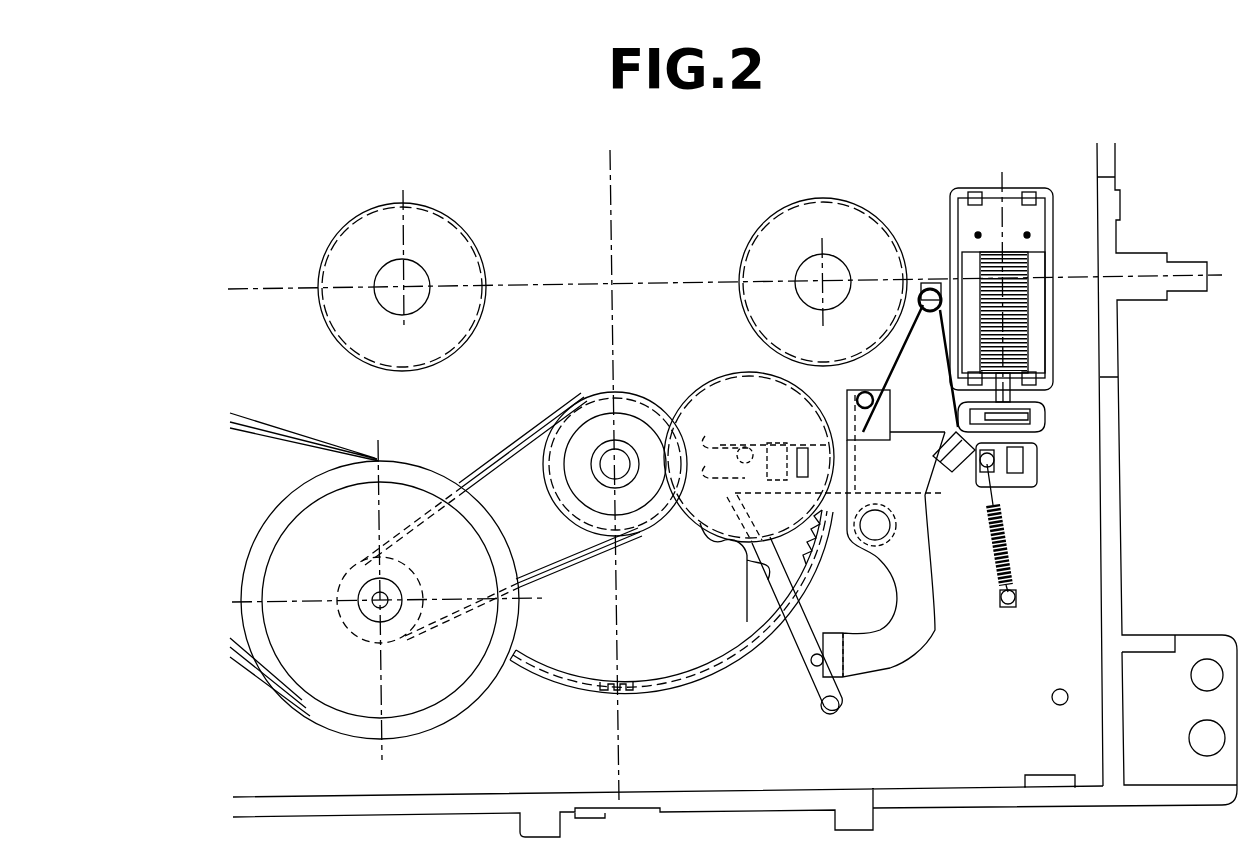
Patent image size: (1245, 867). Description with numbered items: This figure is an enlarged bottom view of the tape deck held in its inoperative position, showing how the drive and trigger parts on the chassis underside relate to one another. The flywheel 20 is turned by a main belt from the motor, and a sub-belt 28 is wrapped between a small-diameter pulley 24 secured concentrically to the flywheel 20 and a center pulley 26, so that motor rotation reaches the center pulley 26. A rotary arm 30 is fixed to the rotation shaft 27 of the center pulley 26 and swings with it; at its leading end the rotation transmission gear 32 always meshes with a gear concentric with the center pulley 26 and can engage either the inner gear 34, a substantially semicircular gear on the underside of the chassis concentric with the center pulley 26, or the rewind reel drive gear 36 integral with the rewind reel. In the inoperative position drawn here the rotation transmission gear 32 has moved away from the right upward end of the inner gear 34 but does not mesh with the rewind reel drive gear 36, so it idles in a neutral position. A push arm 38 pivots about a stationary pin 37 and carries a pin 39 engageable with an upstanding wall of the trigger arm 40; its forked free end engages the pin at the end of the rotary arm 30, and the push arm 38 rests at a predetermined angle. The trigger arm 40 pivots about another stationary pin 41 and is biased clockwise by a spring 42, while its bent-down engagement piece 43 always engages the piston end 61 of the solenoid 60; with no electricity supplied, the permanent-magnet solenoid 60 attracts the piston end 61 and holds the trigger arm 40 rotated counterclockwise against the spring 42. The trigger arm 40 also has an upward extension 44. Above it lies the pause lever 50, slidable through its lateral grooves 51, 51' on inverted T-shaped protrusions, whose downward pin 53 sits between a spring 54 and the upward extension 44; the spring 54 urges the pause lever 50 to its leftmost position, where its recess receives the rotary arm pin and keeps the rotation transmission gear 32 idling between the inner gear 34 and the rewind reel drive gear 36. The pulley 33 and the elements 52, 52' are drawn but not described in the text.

The flywheel 20 is at (335, 697).
The small-diameter pulley 24 is at (357, 577).
The center pulley 26 is at (627, 403).
The rotation shaft 27 is at (613, 464).
The sub-belt 28 is at (498, 458).
The rotary arm 30 is at (700, 523).
The rotation transmission gear 32 is at (740, 398).
The pulley 33 is at (338, 267).
The inner gear 34 is at (558, 672).
The rewind reel drive gear 36 is at (760, 262).
The stationary pin 37 is at (830, 705).
The push arm 38 is at (760, 588).
The pin 39 is at (797, 673).
The trigger arm 40 is at (897, 640).
The stationary pin 41 is at (875, 528).
The spring 42 is at (1015, 555).
The engagement piece 43 is at (1040, 430).
The upward extension 44 is at (865, 420).
The pause lever 50 is at (1030, 468).
The lateral groove 51 is at (1008, 491).
The switch element 52 is at (1048, 469).
The lateral groove 51' is at (818, 423).
The switch element 52' is at (785, 437).
The downward pin 53 is at (874, 382).
The spring 54 is at (907, 345).
The solenoid 60 is at (975, 240).
The piston end 61 is at (1030, 413).